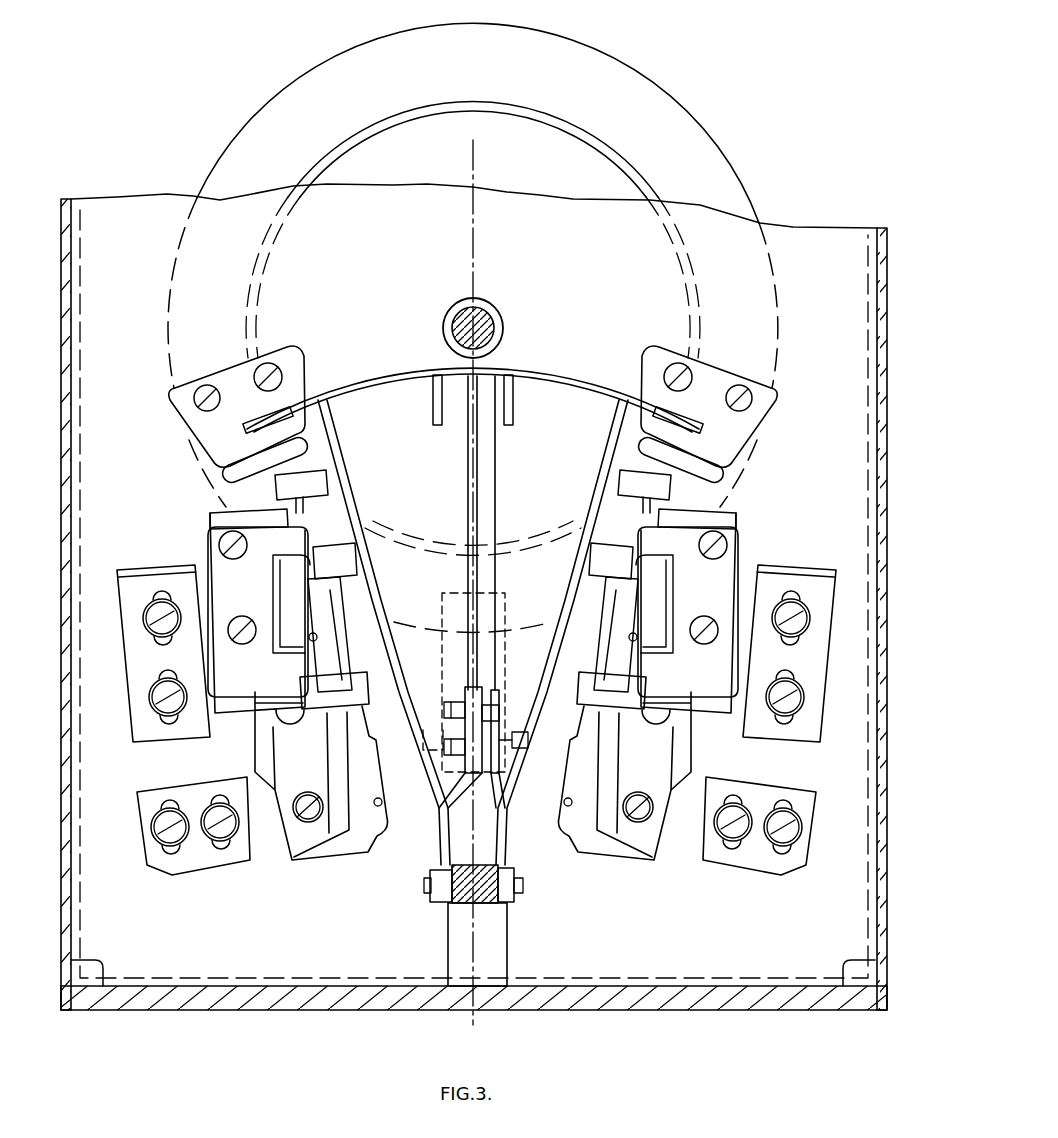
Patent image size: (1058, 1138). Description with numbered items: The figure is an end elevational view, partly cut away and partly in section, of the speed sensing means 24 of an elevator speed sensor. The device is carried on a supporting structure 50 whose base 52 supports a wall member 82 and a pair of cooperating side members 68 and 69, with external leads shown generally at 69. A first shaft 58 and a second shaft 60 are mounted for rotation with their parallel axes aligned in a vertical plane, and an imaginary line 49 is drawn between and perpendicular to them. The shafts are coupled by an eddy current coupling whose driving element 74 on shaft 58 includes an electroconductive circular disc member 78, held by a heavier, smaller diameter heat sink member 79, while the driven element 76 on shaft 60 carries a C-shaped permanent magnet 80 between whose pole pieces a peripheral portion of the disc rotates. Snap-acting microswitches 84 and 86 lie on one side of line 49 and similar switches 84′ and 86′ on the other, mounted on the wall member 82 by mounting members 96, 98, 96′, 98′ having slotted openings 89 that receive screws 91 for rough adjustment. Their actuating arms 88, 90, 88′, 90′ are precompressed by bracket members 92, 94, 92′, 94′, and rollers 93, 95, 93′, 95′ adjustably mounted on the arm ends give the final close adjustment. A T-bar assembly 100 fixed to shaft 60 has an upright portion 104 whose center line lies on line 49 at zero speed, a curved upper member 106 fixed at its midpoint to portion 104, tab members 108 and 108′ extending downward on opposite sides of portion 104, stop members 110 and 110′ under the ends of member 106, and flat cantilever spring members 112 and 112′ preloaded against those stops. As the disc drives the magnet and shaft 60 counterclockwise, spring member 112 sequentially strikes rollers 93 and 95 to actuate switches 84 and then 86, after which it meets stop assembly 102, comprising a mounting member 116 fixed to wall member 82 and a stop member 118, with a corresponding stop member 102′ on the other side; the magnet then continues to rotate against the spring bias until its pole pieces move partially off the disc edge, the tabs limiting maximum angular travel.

The speed sensing means 24 is at (612, 1037).
The imaginary line 49 is at (474, 240).
The supporting structure 50 is at (748, 1011).
The base 52 is at (700, 1011).
The first shaft 58 is at (500, 330).
The second shaft 60 is at (495, 905).
The side member 68 is at (62, 205).
The side member 69 is at (881, 302).
The driving element 74 is at (730, 164).
The driven element 76 is at (544, 668).
The circular disc member 78 is at (683, 106).
The heat sink member 79 is at (606, 144).
The magnet 80 is at (440, 680).
The wall member 82 is at (818, 226).
The switch 84 is at (343, 861).
The switch 84′ is at (624, 790).
The switch 86 is at (212, 546).
The switch 86′ is at (706, 618).
The actuating arm 88 is at (352, 630).
The actuating arm 88′ is at (600, 634).
The slotted openings 89 is at (170, 643).
The actuating arm 90 is at (288, 512).
The actuating arm 90′ is at (671, 513).
The screws 91 is at (160, 640).
The bracket member 92 is at (360, 700).
The bracket member 92′ is at (597, 692).
The roller 93 is at (352, 562).
The roller 93′ is at (589, 561).
The bracket member 94 is at (306, 538).
The bracket member 94′ is at (666, 612).
The roller 95 is at (326, 480).
The roller 95′ is at (661, 488).
The mounting member 96 is at (270, 869).
The mounting member 96′ is at (759, 838).
The mounting member 98 is at (196, 741).
The mounting member 98′ is at (789, 669).
The T-bar assembly 100 is at (547, 450).
The stop assembly 102 is at (174, 412).
The stop member 102′ is at (732, 406).
The portion 104 is at (496, 498).
The curved upper member 106 is at (566, 372).
The tab member 108 is at (433, 400).
The tab member 108′ is at (512, 400).
The stop member 110 is at (264, 430).
The stop member 110′ is at (694, 428).
The cantilever spring member 112 is at (349, 485).
The cantilever spring member 112′ is at (562, 632).
The mounting member 116 is at (291, 360).
The stop member 118 is at (228, 471).